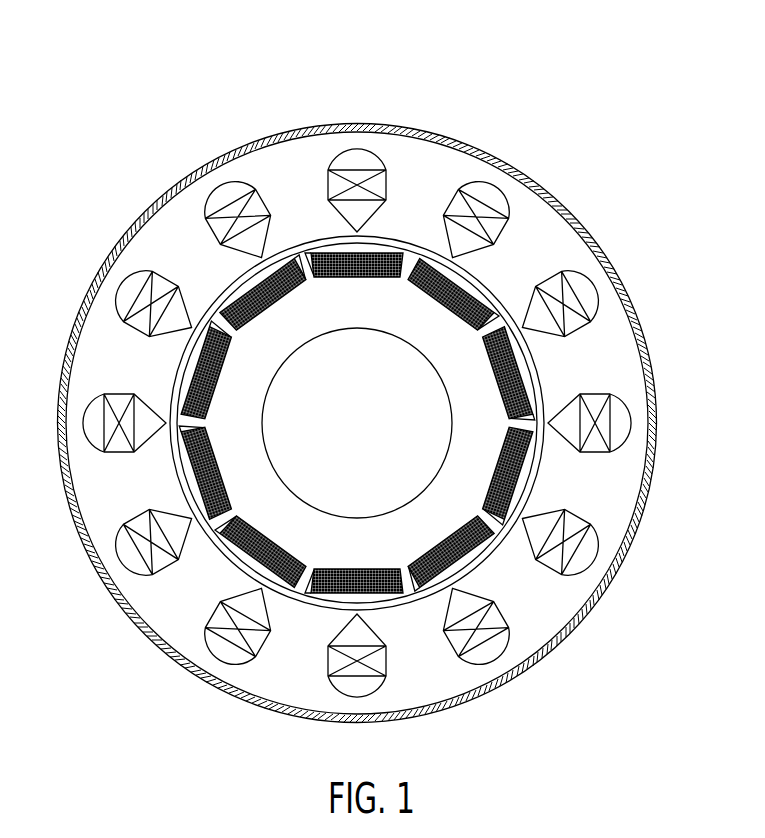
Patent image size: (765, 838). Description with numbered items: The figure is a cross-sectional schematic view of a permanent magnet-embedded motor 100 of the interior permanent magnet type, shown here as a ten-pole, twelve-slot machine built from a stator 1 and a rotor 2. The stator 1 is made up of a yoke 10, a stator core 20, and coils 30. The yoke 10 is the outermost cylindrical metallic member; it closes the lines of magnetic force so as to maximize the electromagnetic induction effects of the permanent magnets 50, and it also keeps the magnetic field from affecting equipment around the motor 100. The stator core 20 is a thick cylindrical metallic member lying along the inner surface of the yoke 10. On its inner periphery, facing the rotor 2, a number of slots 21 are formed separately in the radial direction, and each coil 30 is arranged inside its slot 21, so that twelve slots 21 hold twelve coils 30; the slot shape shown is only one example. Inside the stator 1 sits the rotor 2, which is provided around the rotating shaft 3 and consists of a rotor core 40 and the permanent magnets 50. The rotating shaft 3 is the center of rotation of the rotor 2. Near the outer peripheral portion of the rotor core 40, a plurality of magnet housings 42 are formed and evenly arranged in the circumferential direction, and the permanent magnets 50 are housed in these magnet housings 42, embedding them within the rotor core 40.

The permanent magnet-embedded motor 100 is at (76, 35).
The stator 1 is at (140, 212).
The yoke 10 is at (366, 124).
The stator core 20 is at (278, 172).
The slot 21 is at (580, 324).
The coil 30 is at (485, 197).
The rotor 2 is at (177, 387).
The rotor core 40 is at (437, 323).
The magnet housing 42 is at (413, 597).
The permanent magnet 50 is at (518, 486).
The rotating shaft 3 is at (364, 436).